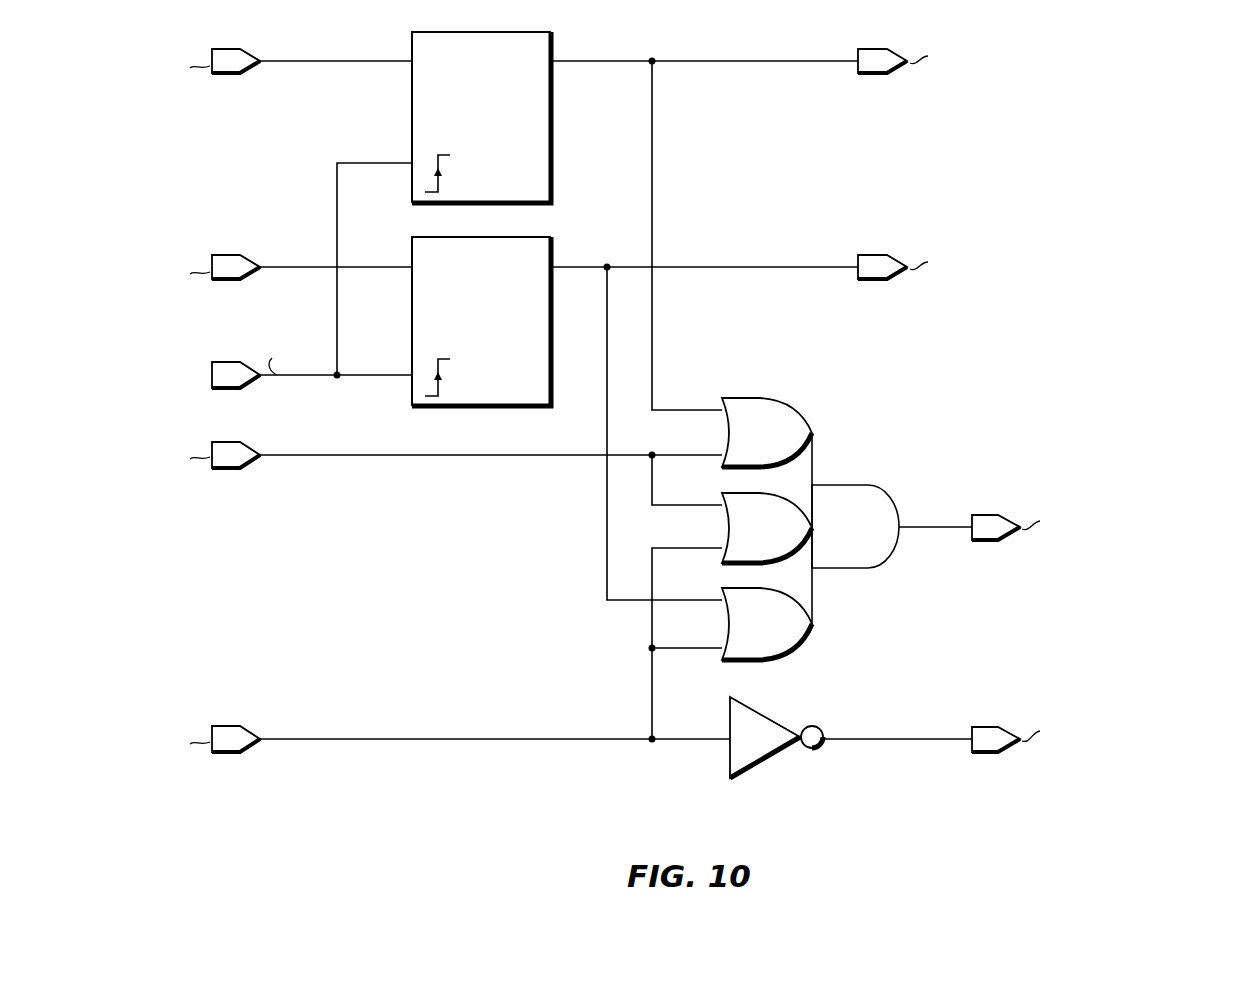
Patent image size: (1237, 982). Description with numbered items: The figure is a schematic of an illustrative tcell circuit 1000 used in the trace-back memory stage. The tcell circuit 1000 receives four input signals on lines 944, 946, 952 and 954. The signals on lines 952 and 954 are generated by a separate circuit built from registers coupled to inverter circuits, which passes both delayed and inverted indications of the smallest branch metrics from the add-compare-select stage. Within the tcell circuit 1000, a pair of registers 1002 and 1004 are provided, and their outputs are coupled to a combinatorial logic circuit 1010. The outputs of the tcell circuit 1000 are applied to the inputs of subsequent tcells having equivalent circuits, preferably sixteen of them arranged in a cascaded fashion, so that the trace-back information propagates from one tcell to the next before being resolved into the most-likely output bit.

The tcell circuit 1000 is at (1122, 188).
The line 952 is at (286, 60).
The line 954 is at (286, 266).
The line 944 is at (357, 457).
The line 946 is at (286, 738).
The register 1002 is at (481, 117).
The register 1004 is at (481, 321).
The combinatorial logic circuit 1010 is at (910, 437).